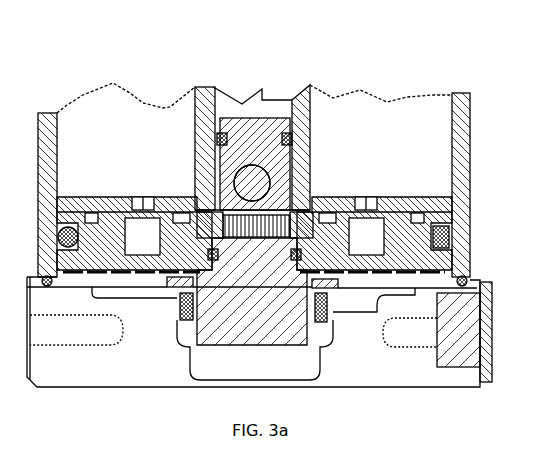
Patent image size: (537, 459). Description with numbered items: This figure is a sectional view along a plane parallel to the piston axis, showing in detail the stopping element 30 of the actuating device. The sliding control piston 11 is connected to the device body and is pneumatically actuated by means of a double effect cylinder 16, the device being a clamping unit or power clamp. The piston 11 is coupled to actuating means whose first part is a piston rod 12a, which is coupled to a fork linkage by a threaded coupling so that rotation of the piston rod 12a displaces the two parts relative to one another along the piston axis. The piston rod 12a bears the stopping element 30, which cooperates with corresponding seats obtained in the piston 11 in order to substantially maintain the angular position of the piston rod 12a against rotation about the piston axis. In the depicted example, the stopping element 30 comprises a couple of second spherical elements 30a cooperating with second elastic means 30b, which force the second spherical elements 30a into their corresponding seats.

The sliding control piston 11 is at (407, 245).
The piston rod 12a is at (308, 125).
The double effect cylinder 16 is at (474, 122).
The stopping element 30 is at (170, 170).
The second spherical elements 30a is at (204, 221).
The second elastic means 30b is at (248, 228).